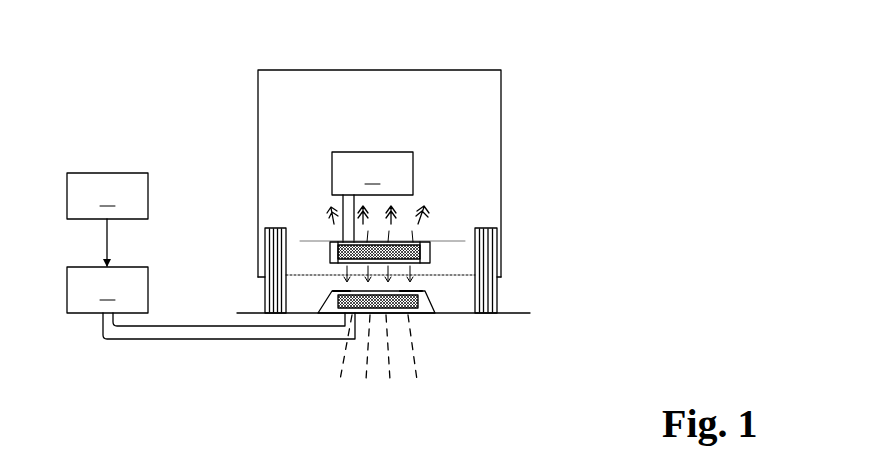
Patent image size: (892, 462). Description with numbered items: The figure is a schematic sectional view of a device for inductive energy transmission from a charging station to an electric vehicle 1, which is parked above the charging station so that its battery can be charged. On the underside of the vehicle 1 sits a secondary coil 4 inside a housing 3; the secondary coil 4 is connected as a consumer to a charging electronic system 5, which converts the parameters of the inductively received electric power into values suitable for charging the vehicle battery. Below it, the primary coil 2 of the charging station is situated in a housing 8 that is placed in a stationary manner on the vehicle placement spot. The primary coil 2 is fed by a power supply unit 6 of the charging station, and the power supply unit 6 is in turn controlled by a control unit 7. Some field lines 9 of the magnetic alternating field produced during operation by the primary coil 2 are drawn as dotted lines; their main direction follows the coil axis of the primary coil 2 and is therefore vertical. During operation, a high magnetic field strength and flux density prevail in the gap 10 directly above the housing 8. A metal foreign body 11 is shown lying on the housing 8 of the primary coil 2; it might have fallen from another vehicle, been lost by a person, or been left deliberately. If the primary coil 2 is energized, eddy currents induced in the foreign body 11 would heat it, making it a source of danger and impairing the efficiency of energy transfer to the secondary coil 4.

The electric vehicle 1 is at (480, 165).
The primary coil 2 is at (403, 300).
The housing 3 is at (330, 248).
The secondary coil 4 is at (427, 246).
The charging electronic system 5 is at (372, 197).
The power supply unit 6 is at (211, 303).
The control unit 7 is at (107, 219).
The housing 8 is at (425, 303).
The field lines 9 is at (342, 360).
The gap 10 is at (397, 283).
The metal foreign body 11 is at (347, 290).